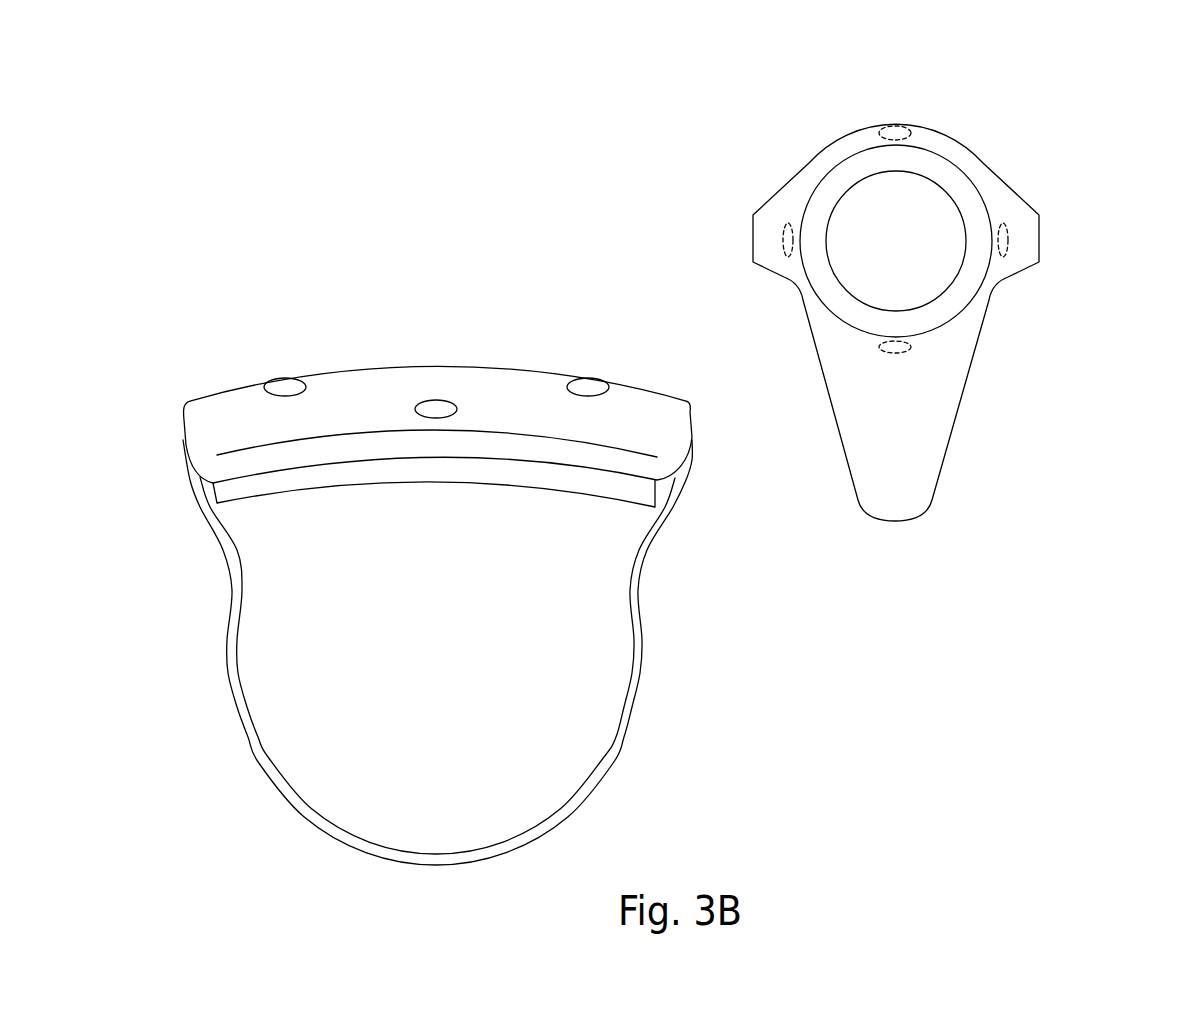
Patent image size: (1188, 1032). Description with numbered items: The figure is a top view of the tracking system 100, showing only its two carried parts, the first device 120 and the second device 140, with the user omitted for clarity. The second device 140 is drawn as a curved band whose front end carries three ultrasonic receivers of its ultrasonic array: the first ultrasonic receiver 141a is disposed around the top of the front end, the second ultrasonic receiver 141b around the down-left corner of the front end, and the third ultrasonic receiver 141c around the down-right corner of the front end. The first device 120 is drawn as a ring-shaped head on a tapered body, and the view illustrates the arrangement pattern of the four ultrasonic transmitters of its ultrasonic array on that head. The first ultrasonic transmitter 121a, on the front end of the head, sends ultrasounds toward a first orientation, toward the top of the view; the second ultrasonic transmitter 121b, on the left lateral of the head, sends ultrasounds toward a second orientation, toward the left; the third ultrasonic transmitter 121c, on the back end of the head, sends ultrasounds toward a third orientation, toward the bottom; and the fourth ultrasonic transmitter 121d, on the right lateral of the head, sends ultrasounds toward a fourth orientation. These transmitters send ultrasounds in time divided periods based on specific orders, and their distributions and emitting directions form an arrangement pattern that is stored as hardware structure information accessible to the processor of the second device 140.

The tracking system 100 is at (730, 62).
The second device 140 is at (420, 161).
The first device 120 is at (777, 161).
The first ultrasonic transmitter 121a is at (898, 132).
The second ultrasonic transmitter 121b is at (787, 239).
The third ultrasonic transmitter 121c is at (897, 348).
The fourth ultrasonic transmitter 121d is at (1004, 238).
The first ultrasonic receiver 141a is at (438, 407).
The second ultrasonic receiver 141b is at (588, 387).
The third ultrasonic receiver 141c is at (285, 387).